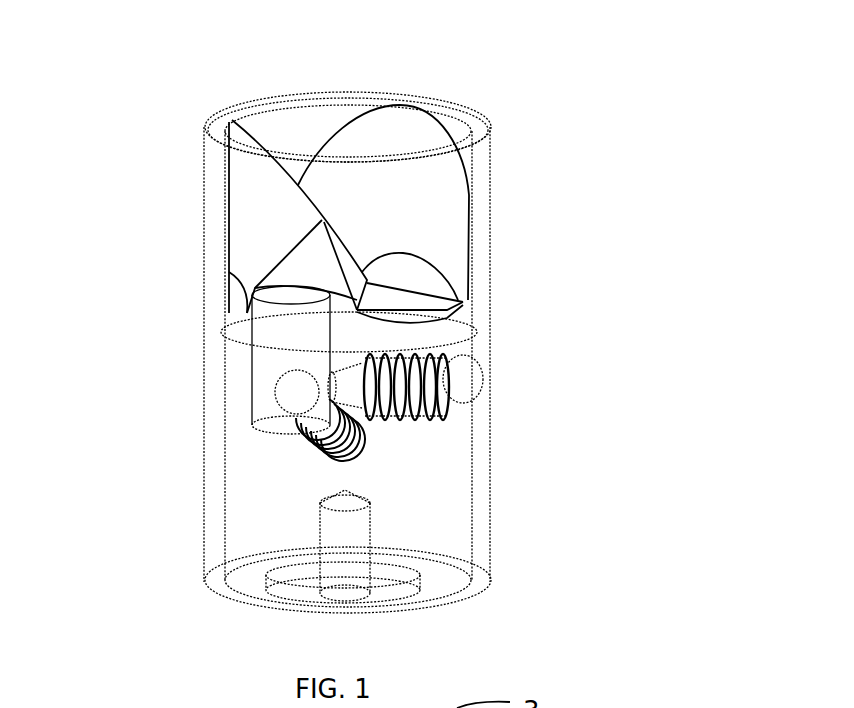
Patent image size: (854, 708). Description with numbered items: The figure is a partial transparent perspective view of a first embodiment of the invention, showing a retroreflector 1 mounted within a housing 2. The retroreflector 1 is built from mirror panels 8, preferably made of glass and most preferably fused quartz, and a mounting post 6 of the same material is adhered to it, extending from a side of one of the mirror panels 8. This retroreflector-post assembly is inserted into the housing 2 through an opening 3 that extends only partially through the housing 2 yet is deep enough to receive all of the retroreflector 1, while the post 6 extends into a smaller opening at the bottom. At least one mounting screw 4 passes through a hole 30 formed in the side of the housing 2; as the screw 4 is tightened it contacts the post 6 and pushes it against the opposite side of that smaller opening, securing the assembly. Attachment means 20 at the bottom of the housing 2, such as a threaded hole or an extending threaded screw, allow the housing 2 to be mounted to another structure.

The retroreflector 1 is at (388, 133).
The housing 2 is at (490, 463).
The opening 3 is at (368, 86).
The mounting screw 4 is at (407, 403).
The mounting post 6 is at (262, 378).
The mirror panels 8 is at (430, 188).
The attachment means 20 is at (377, 532).
The hole 30 is at (467, 382).